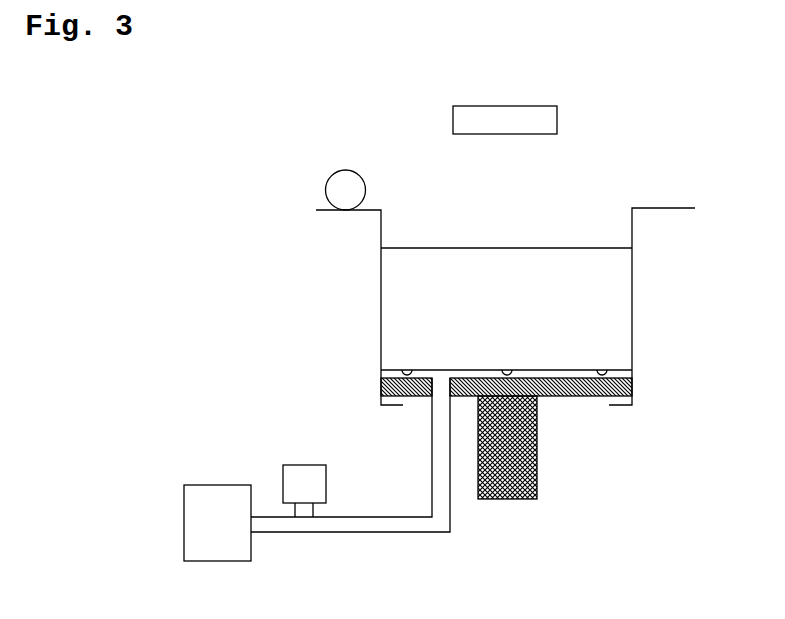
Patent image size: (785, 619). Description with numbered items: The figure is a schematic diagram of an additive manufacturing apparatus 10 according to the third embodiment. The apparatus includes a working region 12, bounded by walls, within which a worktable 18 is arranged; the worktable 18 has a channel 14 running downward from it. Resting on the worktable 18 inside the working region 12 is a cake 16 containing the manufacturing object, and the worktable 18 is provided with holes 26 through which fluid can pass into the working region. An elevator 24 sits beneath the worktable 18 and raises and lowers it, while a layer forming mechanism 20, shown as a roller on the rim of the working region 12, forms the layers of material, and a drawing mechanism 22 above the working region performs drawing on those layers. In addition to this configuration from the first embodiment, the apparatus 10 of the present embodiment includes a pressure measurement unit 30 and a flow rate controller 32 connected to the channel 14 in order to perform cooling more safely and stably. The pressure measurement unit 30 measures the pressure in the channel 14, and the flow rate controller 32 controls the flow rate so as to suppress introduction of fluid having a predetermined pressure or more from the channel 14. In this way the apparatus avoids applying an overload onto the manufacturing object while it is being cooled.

The additive manufacturing apparatus 10 is at (632, 153).
The working region 12 is at (634, 237).
The channel 14 is at (432, 438).
The cake containing a manufacturing object 16 is at (595, 313).
The worktable 18 is at (633, 390).
The layer forming mechanism 20 is at (345, 170).
The drawing mechanism 22 is at (557, 120).
The elevator 24 is at (536, 453).
The hole 26 is at (408, 372).
The pressure measurement unit 30 is at (295, 463).
The flow rate controller 32 is at (212, 483).